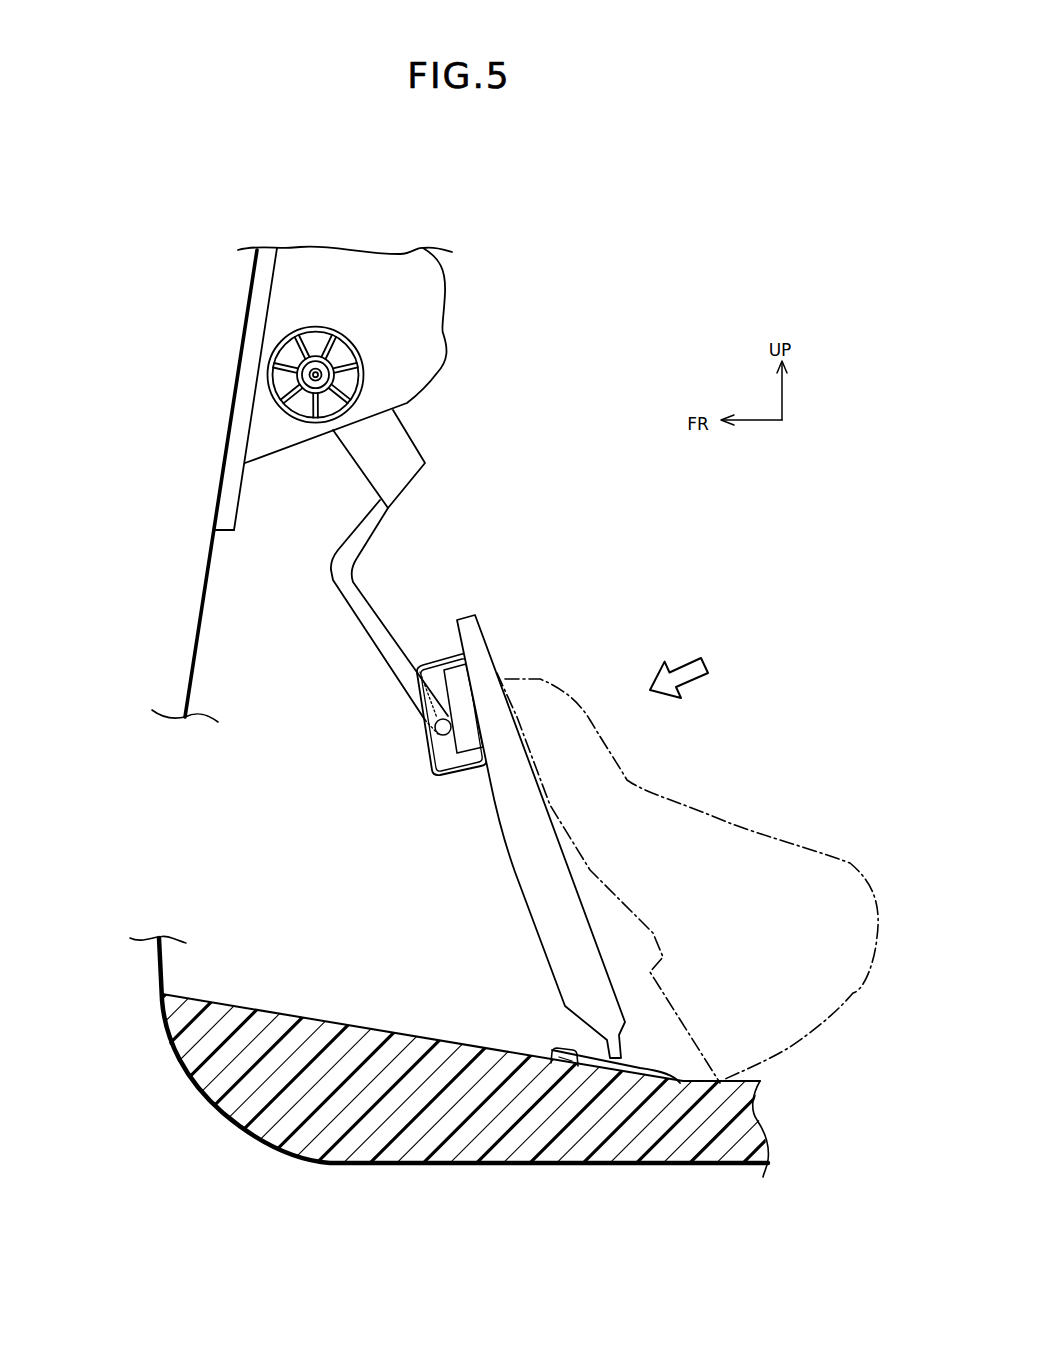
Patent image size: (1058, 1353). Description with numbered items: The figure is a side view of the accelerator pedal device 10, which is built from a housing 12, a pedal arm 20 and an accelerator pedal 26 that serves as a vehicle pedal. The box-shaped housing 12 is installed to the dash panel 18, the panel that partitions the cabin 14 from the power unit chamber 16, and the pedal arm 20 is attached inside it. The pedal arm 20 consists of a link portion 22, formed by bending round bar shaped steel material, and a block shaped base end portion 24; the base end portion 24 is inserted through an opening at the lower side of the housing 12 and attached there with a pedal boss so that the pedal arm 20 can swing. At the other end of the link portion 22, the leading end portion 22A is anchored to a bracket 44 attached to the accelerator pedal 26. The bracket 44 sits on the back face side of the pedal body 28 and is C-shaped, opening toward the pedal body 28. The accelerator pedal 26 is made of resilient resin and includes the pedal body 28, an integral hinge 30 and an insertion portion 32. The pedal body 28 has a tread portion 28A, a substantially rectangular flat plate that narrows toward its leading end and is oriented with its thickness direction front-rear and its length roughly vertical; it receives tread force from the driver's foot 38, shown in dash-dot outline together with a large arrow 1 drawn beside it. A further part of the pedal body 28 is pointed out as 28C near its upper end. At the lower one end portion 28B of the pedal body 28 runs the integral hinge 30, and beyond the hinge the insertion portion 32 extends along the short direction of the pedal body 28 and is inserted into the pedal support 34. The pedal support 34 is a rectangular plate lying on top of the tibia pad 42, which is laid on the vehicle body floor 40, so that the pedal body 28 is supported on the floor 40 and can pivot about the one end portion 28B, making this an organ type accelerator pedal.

The pressing direction of occupant's foot 1 is at (702, 656).
The accelerator pedal device 10 is at (491, 645).
The housing 12 is at (420, 300).
The cabin 14 is at (695, 533).
The power unit chamber 16 is at (159, 402).
The dash panel 18 is at (203, 583).
The pedal arm 20 is at (447, 608).
The link portion 22 is at (425, 636).
The leading end portion 22A is at (433, 743).
The base end portion 24 is at (402, 460).
The accelerator pedal 26 is at (590, 795).
The pedal body 28 is at (541, 783).
The tread portion 28A is at (497, 672).
The one end portion 28B is at (591, 1020).
The front surface of pad 28C is at (472, 646).
The integral hinge 30 is at (621, 1048).
The insertion portion 32 is at (608, 1046).
The pedal support 34 is at (573, 1066).
The foot 38 is at (690, 828).
The vehicle body floor 40 is at (518, 1066).
The tibia pad 42 is at (285, 1020).
The bracket 44 is at (435, 773).